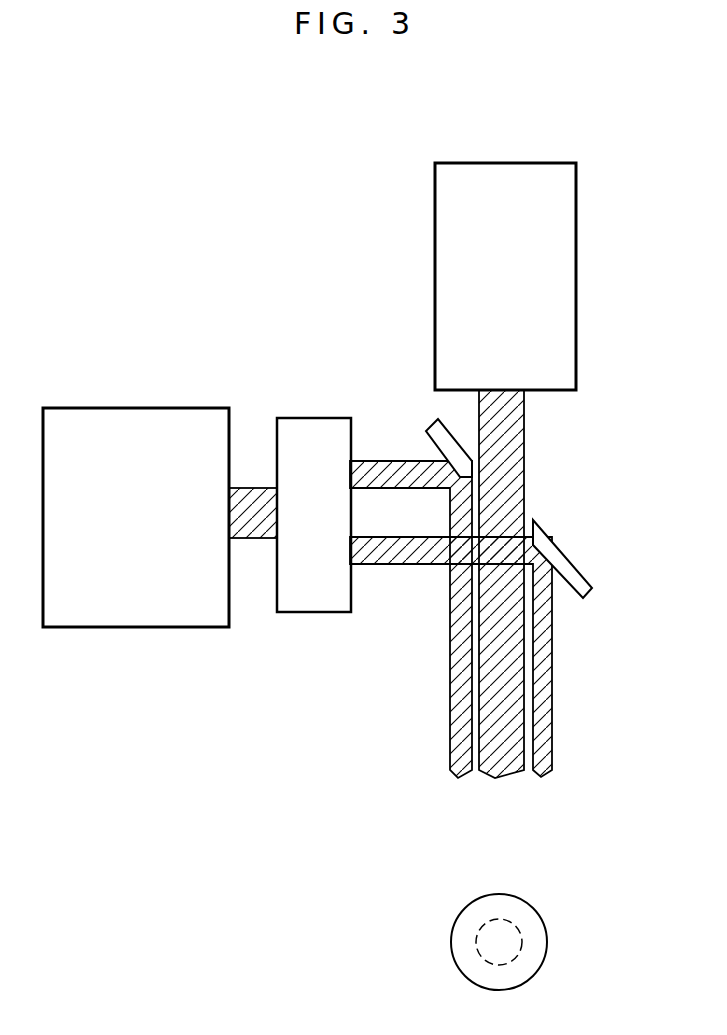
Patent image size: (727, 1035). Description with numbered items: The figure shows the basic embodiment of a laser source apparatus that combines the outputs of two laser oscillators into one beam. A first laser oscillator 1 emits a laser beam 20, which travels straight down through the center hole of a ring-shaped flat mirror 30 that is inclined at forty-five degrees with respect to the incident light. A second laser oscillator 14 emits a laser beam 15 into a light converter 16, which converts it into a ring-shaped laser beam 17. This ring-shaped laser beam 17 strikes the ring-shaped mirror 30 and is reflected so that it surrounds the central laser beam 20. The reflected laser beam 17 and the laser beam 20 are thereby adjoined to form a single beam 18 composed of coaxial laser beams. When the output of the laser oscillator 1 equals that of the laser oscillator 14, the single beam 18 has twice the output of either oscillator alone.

The laser oscillator 1 is at (577, 217).
The laser oscillator 14 is at (126, 407).
The laser beam 15 is at (250, 488).
The light converter 16 is at (312, 418).
The ring-shaped laser beam 17 is at (385, 462).
The single beam 18 is at (560, 783).
The laser beam 20 is at (525, 460).
The ring-shaped flat mirror 30 is at (577, 563).